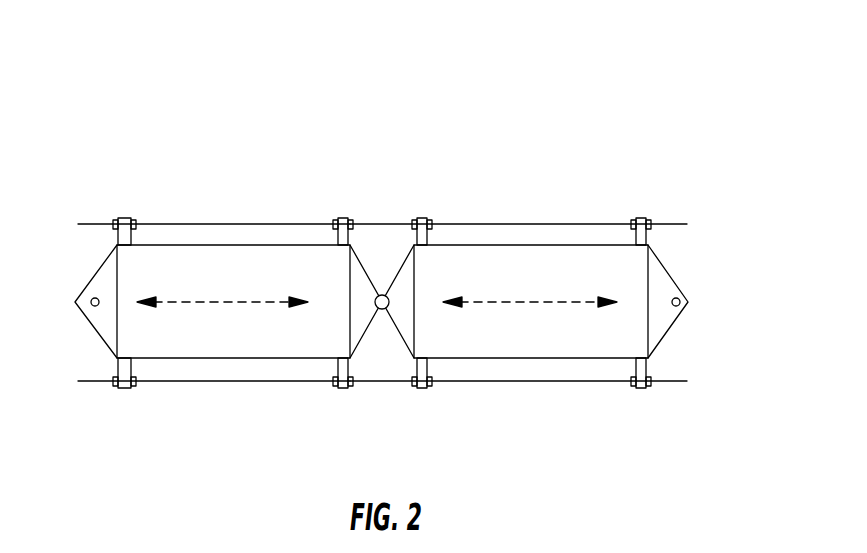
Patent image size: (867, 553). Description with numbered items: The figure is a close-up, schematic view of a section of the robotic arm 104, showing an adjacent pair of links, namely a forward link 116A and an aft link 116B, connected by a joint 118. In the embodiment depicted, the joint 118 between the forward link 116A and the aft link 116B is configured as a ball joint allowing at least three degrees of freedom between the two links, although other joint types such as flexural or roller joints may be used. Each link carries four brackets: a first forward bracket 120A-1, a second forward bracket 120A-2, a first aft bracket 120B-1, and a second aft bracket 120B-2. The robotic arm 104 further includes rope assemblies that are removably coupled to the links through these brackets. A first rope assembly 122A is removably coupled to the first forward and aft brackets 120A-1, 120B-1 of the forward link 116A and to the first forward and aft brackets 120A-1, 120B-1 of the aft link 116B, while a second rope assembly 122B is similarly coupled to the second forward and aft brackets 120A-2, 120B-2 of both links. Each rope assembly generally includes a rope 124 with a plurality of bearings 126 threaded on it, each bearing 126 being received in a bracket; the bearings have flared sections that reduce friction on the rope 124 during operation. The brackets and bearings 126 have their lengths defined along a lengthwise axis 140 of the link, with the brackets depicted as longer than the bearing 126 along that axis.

The robotic arm 104 is at (468, 76).
The forward link 116A is at (502, 267).
The aft link 116B is at (203, 262).
The joint 118 is at (380, 336).
The first forward bracket 120A-1 is at (341, 217).
The second forward bracket 120A-2 is at (342, 388).
The first aft bracket 120B-1 is at (125, 217).
The second aft bracket 120B-2 is at (121, 388).
The first rope assembly 122A is at (462, 214).
The second rope assembly 122B is at (522, 392).
The rope 124 is at (250, 222).
The bearing 126 is at (413, 217).
The lengthwise axis 140 is at (528, 300).